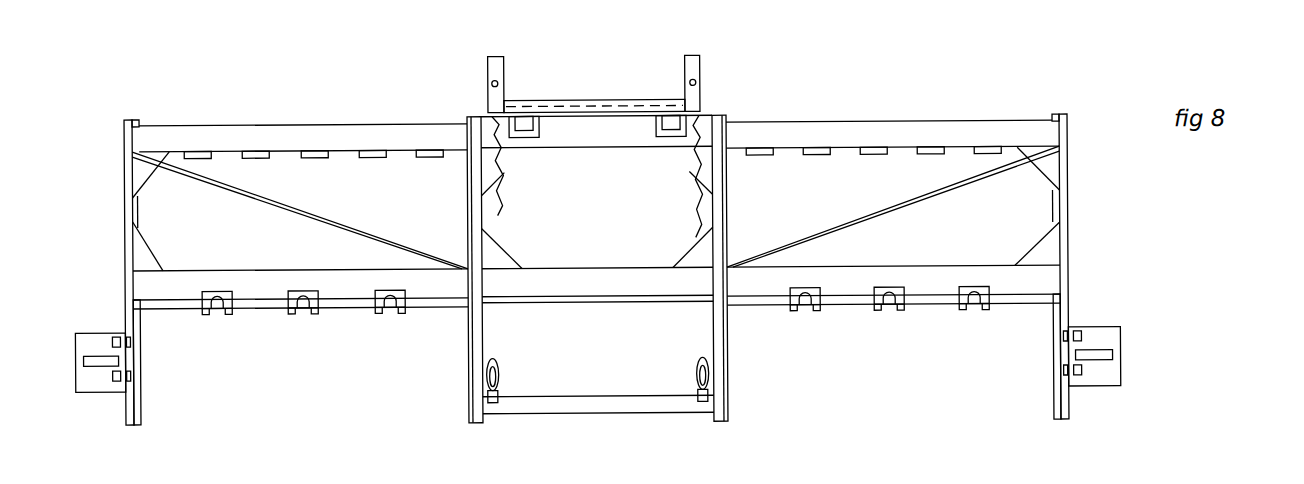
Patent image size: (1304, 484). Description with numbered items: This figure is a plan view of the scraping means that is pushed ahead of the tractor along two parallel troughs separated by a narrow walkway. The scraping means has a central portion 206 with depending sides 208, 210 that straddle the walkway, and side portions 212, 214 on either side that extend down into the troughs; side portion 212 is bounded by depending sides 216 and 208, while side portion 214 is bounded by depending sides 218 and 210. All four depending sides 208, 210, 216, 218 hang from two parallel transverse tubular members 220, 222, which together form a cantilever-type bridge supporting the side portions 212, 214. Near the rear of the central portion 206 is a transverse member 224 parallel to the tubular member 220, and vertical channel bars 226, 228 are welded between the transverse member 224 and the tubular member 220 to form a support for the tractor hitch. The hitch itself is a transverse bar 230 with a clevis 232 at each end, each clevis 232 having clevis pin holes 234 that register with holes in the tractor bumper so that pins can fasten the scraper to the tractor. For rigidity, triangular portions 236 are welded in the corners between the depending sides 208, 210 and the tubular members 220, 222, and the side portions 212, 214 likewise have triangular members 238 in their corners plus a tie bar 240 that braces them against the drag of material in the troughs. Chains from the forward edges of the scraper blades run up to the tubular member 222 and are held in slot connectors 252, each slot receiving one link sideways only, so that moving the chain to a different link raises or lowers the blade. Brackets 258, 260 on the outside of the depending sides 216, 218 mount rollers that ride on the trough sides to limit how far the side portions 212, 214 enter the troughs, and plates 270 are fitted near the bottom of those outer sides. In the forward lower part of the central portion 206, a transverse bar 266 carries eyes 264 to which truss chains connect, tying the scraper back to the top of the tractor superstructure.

The central portion 206 is at (565, 255).
The depending side 208 is at (482, 322).
The depending side 210 is at (713, 306).
The side portion 212 is at (297, 110).
The side portion 214 is at (899, 100).
The depending side 216 is at (124, 214).
The depending side 218 is at (1068, 205).
The transverse tubular member 220 is at (1015, 124).
The transverse tubular member 222 is at (1048, 272).
The transverse member 224 is at (623, 140).
The vertical channel bar 226 is at (668, 116).
The vertical channel bar 228 is at (524, 116).
The transverse bar 230 is at (590, 100).
The clevis 232 is at (489, 62).
The clevis pin hole 234 is at (493, 84).
The triangular portion 236 is at (493, 253).
The corner brace 238 is at (148, 170).
The tie bar 240 is at (280, 203).
The slot connector 252 is at (228, 313).
The bracket 258 is at (85, 332).
The bracket 260 is at (1100, 330).
The eye 264 is at (498, 385).
The transverse bar 266 is at (614, 404).
The post lower plate 270 is at (141, 408).